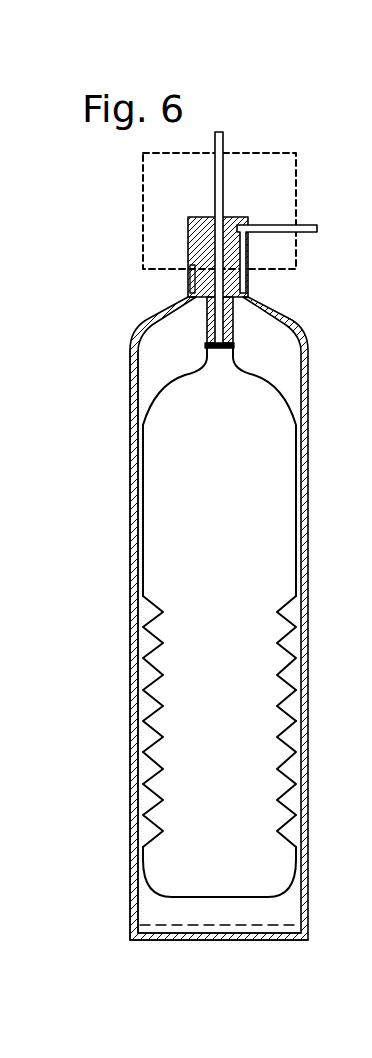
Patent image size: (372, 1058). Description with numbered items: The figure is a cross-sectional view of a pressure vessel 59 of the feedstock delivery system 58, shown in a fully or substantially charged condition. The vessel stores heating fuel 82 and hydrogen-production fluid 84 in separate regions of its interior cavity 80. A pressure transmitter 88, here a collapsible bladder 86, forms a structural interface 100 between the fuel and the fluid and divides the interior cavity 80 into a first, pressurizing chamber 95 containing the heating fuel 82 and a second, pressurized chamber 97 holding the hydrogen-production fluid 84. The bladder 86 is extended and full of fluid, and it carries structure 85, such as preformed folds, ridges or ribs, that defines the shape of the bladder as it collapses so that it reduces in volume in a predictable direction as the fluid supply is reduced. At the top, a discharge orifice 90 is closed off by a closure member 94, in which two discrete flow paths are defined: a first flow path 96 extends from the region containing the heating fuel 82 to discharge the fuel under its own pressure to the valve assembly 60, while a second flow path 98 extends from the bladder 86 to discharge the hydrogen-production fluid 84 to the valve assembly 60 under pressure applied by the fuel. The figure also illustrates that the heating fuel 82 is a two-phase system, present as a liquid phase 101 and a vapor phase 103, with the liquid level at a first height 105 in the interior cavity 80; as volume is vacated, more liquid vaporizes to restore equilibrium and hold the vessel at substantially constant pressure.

The feedstock delivery system 58 is at (90, 315).
The pressure vessel 59 is at (128, 334).
The valve assembly 60 is at (138, 190).
The interior cavity 80 is at (282, 346).
The heating fuel 82 is at (293, 611).
The hydrogen-production fluid 84 is at (165, 525).
The structure 85 is at (152, 670).
The bladder 86 is at (150, 374).
The pressure transmitter 88 is at (166, 368).
The discharge orifice 90 is at (198, 284).
The closure member 94 is at (198, 210).
The first chamber 95 is at (207, 922).
The first flow path 96 is at (303, 233).
The second chamber 97 is at (227, 679).
The second flow path 98 is at (223, 162).
The interface 100 is at (295, 772).
The liquid phase 101 is at (287, 908).
The vapor phase 103 is at (290, 640).
The first height 105 is at (294, 702).